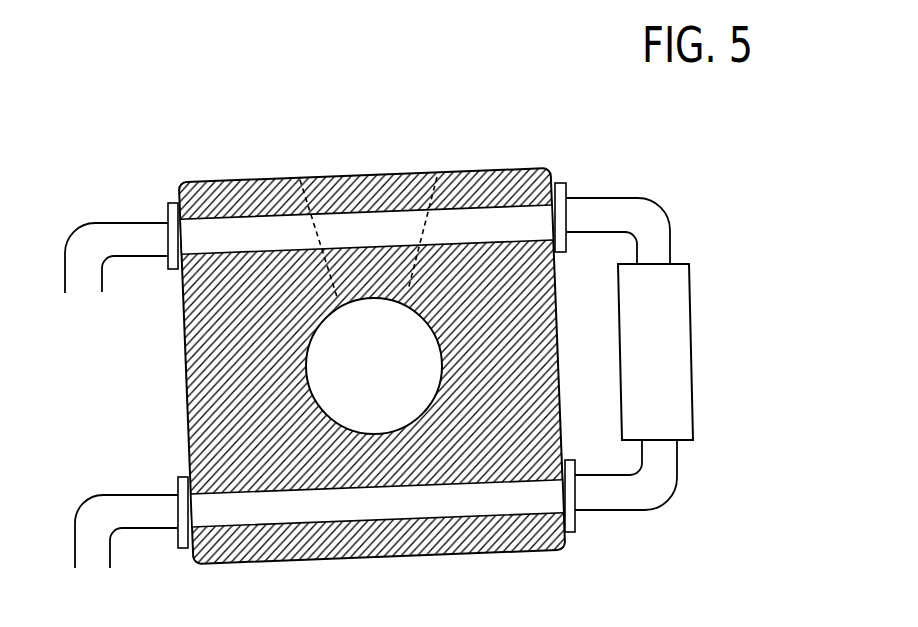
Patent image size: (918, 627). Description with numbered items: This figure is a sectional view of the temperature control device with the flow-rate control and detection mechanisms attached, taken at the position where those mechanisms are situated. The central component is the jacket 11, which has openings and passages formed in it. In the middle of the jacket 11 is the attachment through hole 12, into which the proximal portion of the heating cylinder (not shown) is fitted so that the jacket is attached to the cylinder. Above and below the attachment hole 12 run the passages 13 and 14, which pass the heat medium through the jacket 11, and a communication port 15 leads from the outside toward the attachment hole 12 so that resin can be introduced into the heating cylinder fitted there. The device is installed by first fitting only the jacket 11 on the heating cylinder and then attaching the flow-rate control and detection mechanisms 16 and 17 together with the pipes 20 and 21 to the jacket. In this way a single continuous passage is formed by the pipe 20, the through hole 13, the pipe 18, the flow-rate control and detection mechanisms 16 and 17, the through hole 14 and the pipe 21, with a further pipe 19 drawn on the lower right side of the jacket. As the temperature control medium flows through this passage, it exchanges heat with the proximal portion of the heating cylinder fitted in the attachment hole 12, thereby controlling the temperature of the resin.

The jacket 11 is at (492, 170).
The attachment through hole 12 is at (355, 364).
The passage 13 is at (252, 230).
The passage 14 is at (480, 500).
The communication port 15 is at (362, 185).
The flow-rate control mechanism 16 is at (716, 352).
The flow-rate detection mechanism 17 is at (680, 351).
The pipe 18 is at (613, 213).
The lower right pipe 19 is at (622, 495).
The pipe 20 is at (128, 237).
The pipe 21 is at (137, 515).